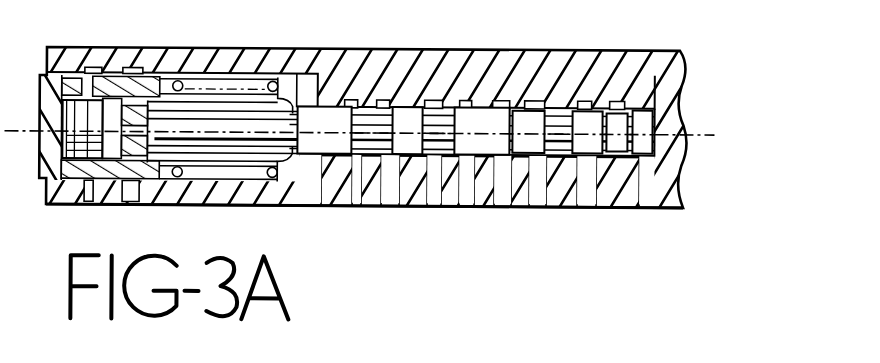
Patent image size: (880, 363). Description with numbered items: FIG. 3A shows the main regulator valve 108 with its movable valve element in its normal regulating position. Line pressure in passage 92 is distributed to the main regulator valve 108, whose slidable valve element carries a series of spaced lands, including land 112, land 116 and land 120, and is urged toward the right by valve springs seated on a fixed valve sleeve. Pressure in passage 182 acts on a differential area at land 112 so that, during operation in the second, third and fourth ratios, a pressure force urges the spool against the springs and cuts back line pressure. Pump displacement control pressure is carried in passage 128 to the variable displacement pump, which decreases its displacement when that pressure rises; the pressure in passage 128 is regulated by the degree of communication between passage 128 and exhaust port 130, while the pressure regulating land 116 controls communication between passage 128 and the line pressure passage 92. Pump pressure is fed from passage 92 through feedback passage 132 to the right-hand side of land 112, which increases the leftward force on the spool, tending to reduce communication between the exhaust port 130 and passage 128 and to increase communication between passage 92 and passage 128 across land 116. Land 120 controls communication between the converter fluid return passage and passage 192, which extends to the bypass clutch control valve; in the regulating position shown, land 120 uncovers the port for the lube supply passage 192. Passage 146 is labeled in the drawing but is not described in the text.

The main regulator valve 108 is at (700, 98).
The land 120 is at (317, 118).
The land 116 is at (488, 118).
The land 112 is at (618, 118).
The passage 192 is at (351, 193).
The port 146 is at (394, 193).
The passage 128 is at (438, 194).
The exhaust port 130 is at (473, 193).
The passage 92 is at (537, 193).
The passage 182 is at (588, 194).
The feedback passage 132 is at (642, 193).